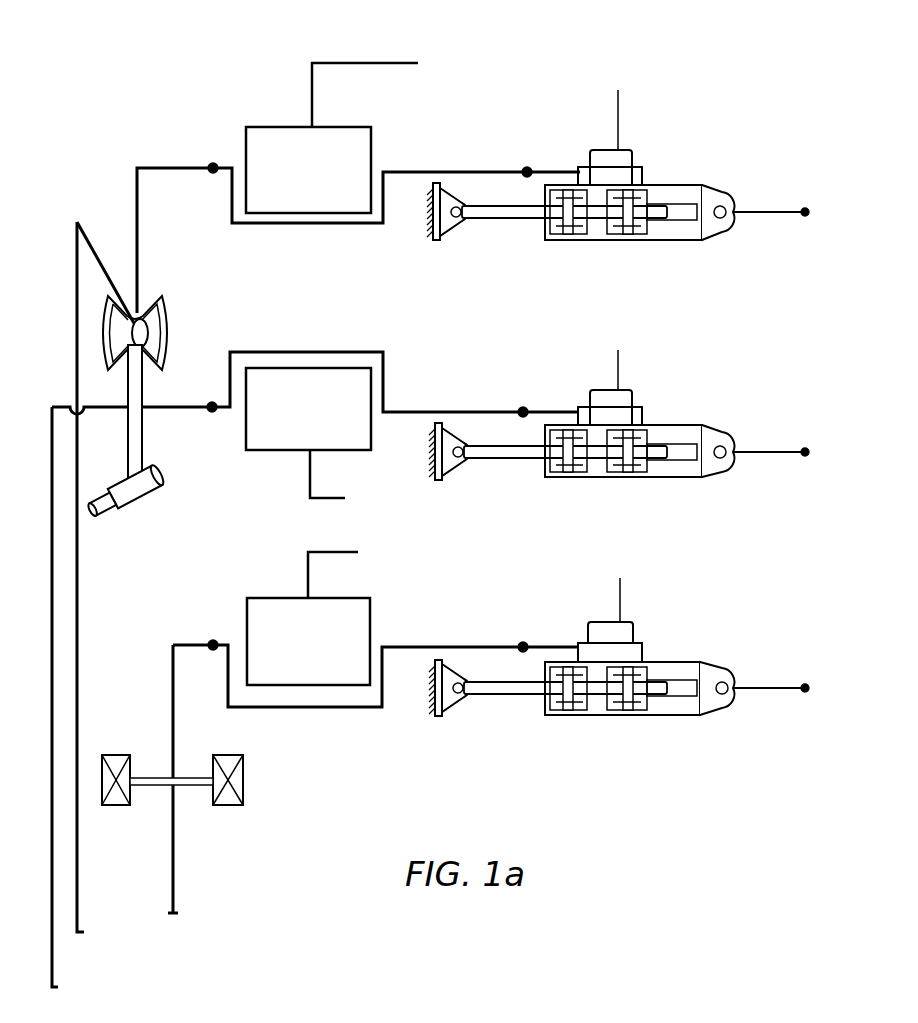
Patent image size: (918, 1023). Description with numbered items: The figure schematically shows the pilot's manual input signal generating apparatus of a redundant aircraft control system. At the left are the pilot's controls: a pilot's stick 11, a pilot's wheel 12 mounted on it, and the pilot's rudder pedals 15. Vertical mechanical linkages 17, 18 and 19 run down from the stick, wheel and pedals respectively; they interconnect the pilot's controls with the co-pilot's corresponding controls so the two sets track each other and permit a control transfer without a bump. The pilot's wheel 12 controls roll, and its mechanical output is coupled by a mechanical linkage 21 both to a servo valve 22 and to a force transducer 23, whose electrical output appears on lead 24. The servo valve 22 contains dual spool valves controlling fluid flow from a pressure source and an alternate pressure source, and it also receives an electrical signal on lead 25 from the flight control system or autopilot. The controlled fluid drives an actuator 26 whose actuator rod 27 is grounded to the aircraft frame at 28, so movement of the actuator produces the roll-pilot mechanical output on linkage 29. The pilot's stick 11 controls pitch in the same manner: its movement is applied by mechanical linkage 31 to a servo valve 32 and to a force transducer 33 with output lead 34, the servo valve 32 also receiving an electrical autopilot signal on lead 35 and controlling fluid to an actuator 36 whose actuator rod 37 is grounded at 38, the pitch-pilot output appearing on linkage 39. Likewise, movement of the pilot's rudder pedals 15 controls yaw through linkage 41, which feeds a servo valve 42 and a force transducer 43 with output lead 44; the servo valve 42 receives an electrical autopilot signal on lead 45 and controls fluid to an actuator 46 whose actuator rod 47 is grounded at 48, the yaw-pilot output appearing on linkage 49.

The pilot's stick 11 is at (150, 438).
The pilot's wheel 12 is at (161, 330).
The pilot's rudder pedals 15 is at (188, 788).
The mechanical linkage 17 is at (52, 974).
The mechanical linkage 18 is at (77, 905).
The mechanical linkage 19 is at (173, 893).
The mechanical linkage 21 is at (137, 222).
The servo valve 22 is at (636, 139).
The force transducer 23 is at (260, 127).
The lead 24 is at (312, 63).
The lead 25 is at (618, 108).
The actuator 26 is at (597, 242).
The actuator rod 27 is at (497, 222).
The ground 28 is at (437, 241).
The mechanical linkage 29 is at (766, 220).
The mechanical linkage 31 is at (212, 412).
The servo valve 32 is at (638, 377).
The force transducer 33 is at (251, 450).
The lead 34 is at (310, 496).
The lead 35 is at (618, 360).
The actuator 36 is at (655, 478).
The actuator rod 37 is at (500, 460).
The ground 38 is at (438, 478).
The linkage 39 is at (762, 452).
The linkage 41 is at (173, 642).
The servo valve 42 is at (640, 609).
The force transducer 43 is at (373, 616).
The lead 44 is at (308, 570).
The lead 45 is at (620, 593).
The actuator 46 is at (597, 716).
The actuator rod 47 is at (505, 698).
The ground 48 is at (436, 714).
The linkage 49 is at (762, 690).